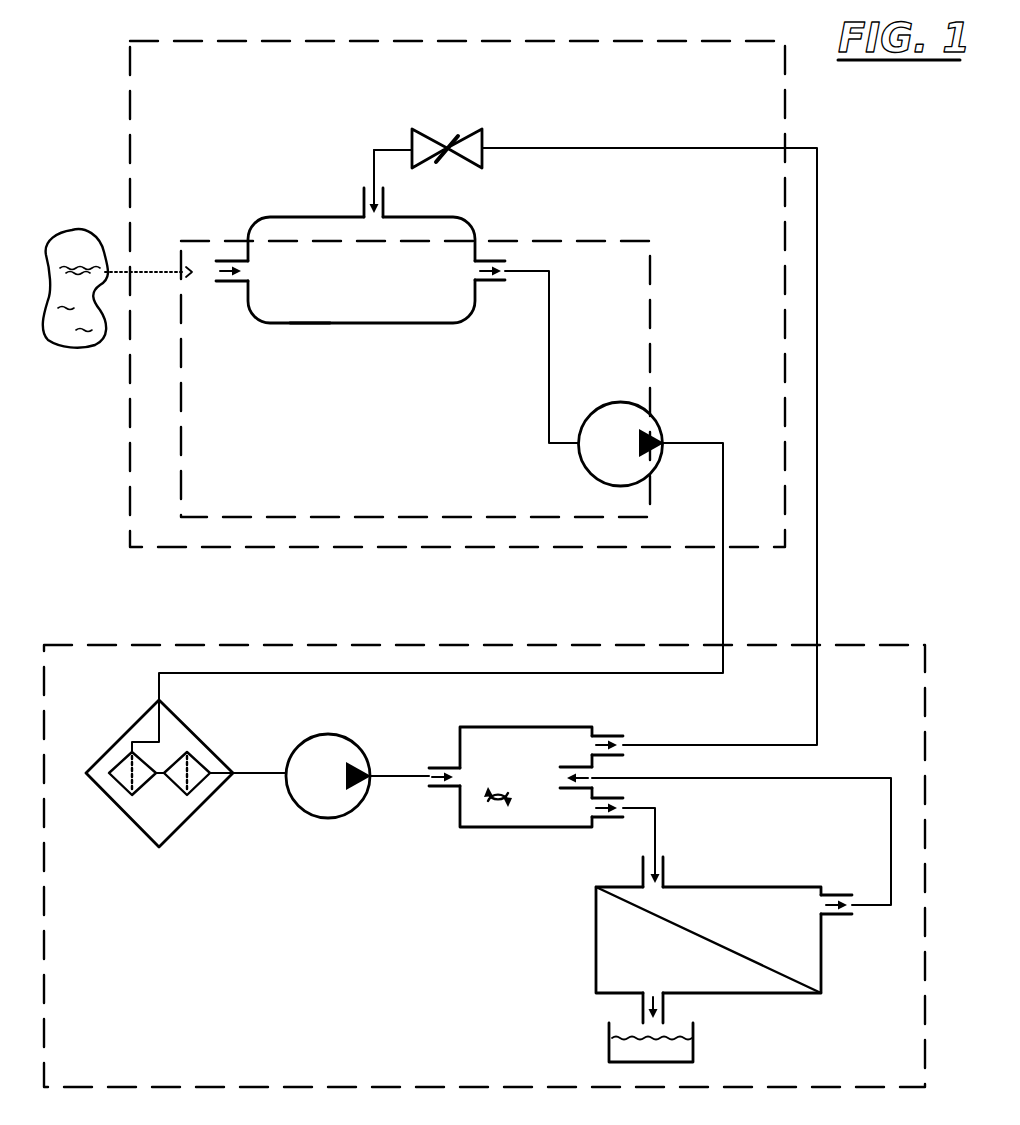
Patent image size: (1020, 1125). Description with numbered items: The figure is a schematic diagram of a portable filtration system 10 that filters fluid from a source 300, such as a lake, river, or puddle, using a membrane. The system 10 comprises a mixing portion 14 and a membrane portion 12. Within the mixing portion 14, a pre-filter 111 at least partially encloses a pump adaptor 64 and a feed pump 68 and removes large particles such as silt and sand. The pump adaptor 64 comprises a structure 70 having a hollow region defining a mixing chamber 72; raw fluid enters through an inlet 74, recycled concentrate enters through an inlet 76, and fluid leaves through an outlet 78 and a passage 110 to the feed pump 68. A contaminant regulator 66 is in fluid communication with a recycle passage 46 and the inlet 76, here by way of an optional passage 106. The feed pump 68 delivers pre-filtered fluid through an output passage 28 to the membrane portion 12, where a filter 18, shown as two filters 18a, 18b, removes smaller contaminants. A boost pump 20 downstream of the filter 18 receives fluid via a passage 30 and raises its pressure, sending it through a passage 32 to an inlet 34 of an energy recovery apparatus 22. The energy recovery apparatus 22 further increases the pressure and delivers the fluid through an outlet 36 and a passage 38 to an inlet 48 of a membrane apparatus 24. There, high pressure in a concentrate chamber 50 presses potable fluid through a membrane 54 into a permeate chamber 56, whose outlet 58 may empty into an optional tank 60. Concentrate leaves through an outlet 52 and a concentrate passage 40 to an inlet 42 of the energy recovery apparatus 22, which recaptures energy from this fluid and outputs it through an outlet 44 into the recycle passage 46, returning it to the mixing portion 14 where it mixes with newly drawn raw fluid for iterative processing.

The portable filtration system 10 is at (864, 157).
The membrane portion 12 is at (904, 630).
The mixing portion 14 is at (578, 34).
The filter 18 is at (108, 732).
The filter 18a is at (118, 790).
The filter 18b is at (178, 788).
The boost pump 20 is at (313, 724).
The energy recovery apparatus 22 is at (453, 715).
The membrane apparatus 24 is at (582, 910).
The output passage 28 is at (724, 522).
The passage 30 is at (258, 775).
The passage 32 is at (400, 779).
The inlet 34 is at (448, 788).
The outlet 36 is at (608, 818).
The passage 38 is at (657, 823).
The concentrate passage 40 is at (838, 778).
The inlet 42 is at (575, 766).
The outlet 44 is at (612, 733).
The recycle passage 46 is at (818, 522).
The inlet 48 is at (666, 873).
The concentrate chamber 50 is at (717, 935).
The outlet 52 is at (835, 895).
The membrane 54 is at (740, 940).
The permeate chamber 56 is at (664, 957).
The outlet 58 is at (666, 1016).
The tank 60 is at (609, 1050).
The pump adaptor 64 is at (296, 205).
The contaminant regulator 66 is at (430, 119).
The feed pump 68 is at (623, 388).
The structure 70 is at (301, 328).
The mixing chamber 72 is at (349, 285).
The inlet 74 is at (233, 260).
The inlet 76 is at (386, 203).
The outlet 78 is at (495, 260).
The passage 106 is at (373, 160).
The passage 110 is at (552, 282).
The pre-filter 111 is at (206, 528).
The source 300 is at (85, 243).